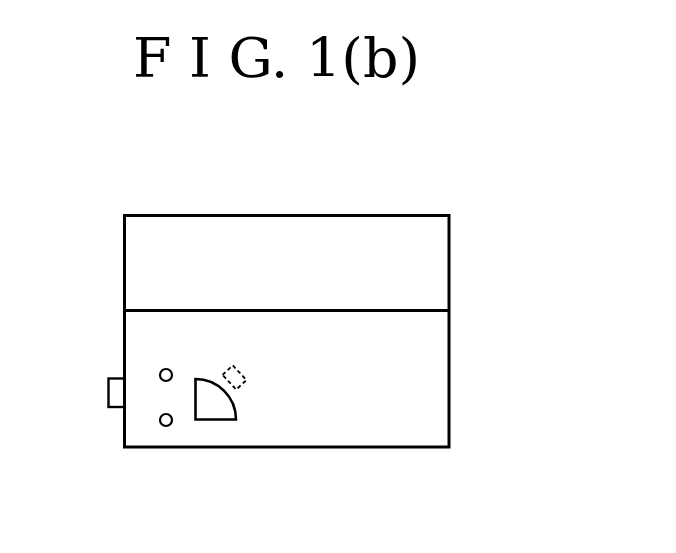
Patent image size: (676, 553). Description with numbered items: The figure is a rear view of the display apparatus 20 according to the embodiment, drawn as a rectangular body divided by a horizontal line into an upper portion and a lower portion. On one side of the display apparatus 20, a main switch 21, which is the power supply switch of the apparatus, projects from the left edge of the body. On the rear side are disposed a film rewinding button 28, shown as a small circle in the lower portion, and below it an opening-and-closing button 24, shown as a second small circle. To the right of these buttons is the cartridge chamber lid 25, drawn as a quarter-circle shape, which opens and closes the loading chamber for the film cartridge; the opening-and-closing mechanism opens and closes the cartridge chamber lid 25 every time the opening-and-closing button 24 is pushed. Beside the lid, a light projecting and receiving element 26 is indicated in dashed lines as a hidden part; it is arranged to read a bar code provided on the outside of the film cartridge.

The display apparatus 20 is at (438, 247).
The main switch 21 is at (107, 394).
The opening-and-closing button 24 is at (164, 427).
The cartridge chamber lid 25 is at (208, 410).
The light projecting and receiving element 26 is at (246, 386).
The film rewinding button 28 is at (160, 371).